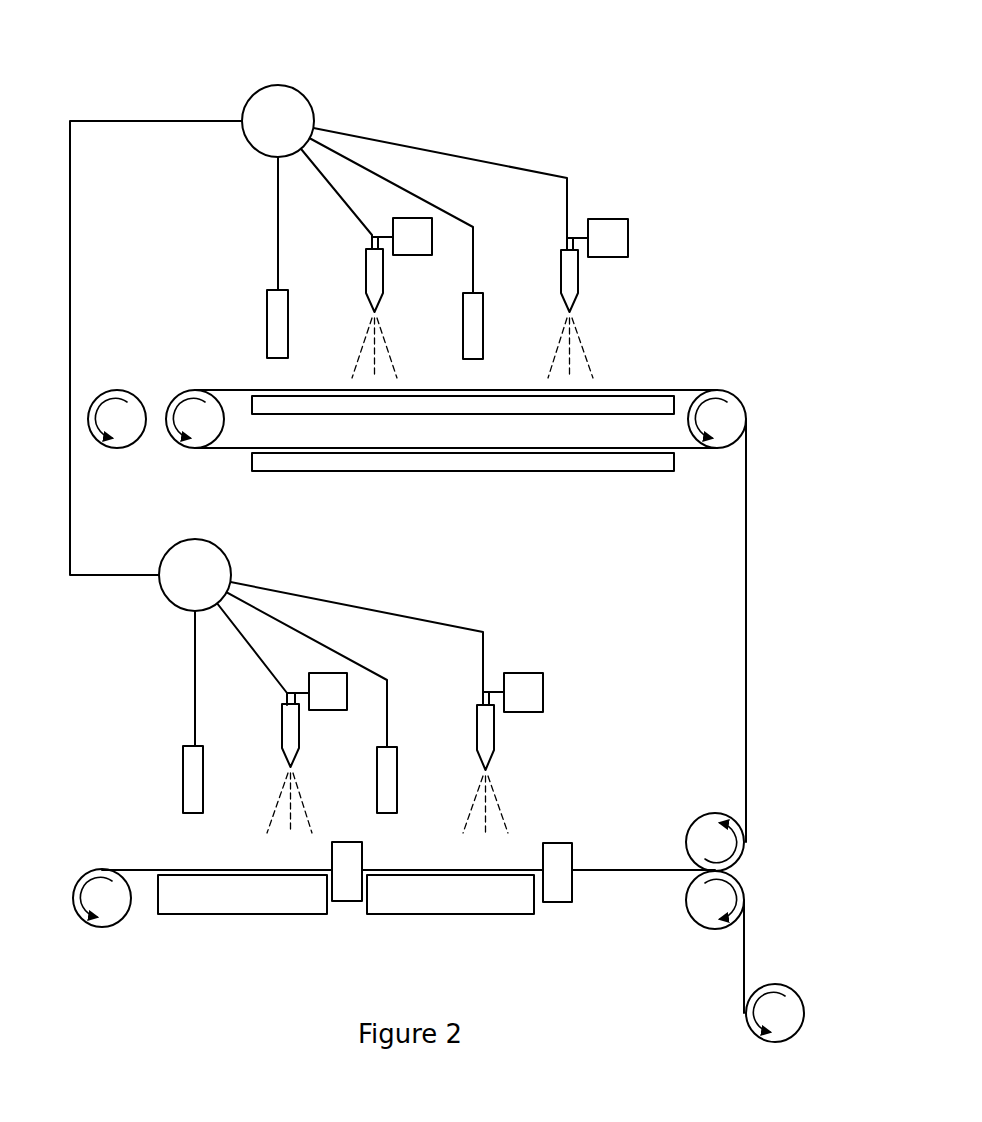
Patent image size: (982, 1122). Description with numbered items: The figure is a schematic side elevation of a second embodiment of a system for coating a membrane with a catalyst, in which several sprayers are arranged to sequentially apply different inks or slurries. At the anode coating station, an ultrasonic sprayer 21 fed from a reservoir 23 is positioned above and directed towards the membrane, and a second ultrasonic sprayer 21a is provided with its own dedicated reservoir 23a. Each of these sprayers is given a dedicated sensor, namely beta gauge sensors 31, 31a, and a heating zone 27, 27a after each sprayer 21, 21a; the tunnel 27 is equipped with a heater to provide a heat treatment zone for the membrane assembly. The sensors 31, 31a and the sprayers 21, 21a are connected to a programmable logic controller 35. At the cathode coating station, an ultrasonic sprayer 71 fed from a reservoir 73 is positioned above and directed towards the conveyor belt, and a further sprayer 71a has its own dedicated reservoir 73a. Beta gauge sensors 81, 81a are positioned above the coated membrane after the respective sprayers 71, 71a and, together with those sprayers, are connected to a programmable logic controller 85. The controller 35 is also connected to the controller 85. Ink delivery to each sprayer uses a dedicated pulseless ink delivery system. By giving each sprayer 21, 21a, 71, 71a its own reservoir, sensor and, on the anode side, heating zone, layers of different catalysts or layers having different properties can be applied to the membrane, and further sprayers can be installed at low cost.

The programmable logic controller 85 is at (281, 86).
The programmable logic controller 35 is at (193, 539).
The ultrasonic sprayer 71 is at (578, 277).
The ultrasonic sprayer 71a is at (383, 267).
The reservoir 73 is at (628, 228).
The reservoir 73a is at (393, 225).
The sensor 81 is at (463, 338).
The sensor 81a is at (267, 317).
The ultrasonic sprayer 21 is at (494, 733).
The ultrasonic sprayer 21a is at (299, 723).
The reservoir 23 is at (543, 682).
The reservoir 23a is at (309, 683).
The sensor 31 is at (377, 795).
The sensor 31a is at (183, 770).
The tunnel 27 is at (557, 905).
The heating zone 27a is at (347, 903).